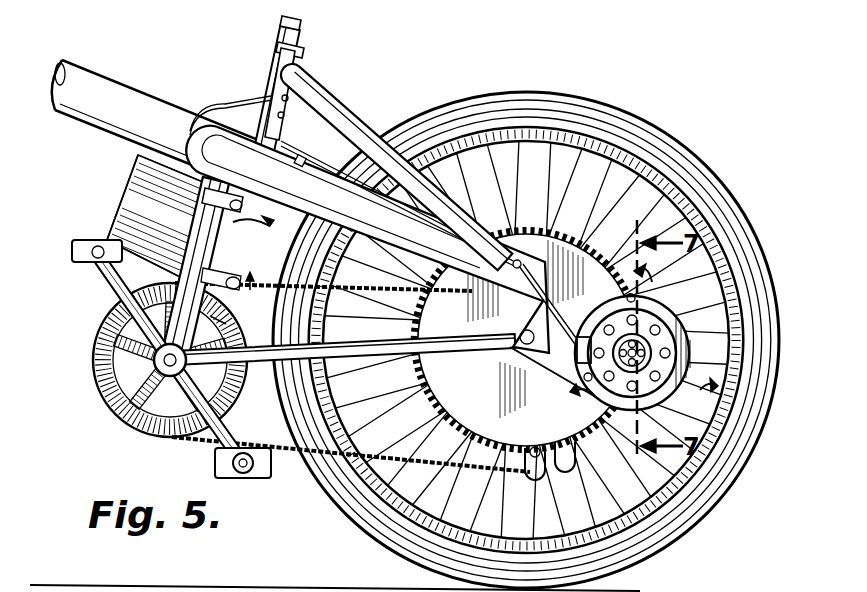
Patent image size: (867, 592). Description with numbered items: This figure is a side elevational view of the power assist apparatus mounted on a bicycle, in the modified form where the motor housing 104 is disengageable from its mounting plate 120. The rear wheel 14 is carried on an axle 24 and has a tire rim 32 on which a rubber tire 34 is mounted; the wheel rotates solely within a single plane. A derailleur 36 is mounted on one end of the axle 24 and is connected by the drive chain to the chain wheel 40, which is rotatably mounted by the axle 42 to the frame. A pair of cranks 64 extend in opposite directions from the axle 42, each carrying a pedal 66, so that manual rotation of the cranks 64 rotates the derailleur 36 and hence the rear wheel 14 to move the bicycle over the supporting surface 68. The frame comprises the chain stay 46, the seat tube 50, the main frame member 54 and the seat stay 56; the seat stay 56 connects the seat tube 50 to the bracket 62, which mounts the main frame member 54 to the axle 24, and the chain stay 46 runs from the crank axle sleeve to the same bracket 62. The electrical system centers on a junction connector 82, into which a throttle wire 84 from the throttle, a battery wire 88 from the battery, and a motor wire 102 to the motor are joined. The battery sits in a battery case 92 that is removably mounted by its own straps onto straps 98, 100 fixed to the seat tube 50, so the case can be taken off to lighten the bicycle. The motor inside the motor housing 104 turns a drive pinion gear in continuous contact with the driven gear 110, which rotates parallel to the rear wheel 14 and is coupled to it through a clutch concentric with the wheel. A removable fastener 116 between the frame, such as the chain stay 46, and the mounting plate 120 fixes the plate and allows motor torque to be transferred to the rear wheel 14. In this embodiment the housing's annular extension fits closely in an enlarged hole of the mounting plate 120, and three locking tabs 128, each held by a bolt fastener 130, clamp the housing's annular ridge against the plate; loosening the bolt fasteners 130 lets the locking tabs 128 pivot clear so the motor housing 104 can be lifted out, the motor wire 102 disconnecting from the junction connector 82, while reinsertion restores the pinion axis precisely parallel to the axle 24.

The rear wheel 14 is at (549, 308).
The axle 24 is at (526, 340).
The tire rim 32 is at (526, 340).
The rubber tire 34 is at (526, 340).
The derailleur 36 is at (300, 470).
The chain wheel 40 is at (143, 360).
The axle 42 is at (100, 365).
The chain stay 46 is at (520, 470).
The seat tube 50 is at (218, 318).
The main frame member 54 is at (153, 101).
The seat stay 56 is at (325, 82).
The bracket 62 is at (526, 340).
The cranks 64 is at (115, 283).
The pedal 66 is at (80, 256).
The supporting surface 68 is at (718, 588).
The junction connector 82 is at (265, 85).
The throttle wire 84 is at (98, 128).
The battery wire 88 is at (137, 218).
The battery case 92 is at (115, 218).
The strap 98 is at (208, 205).
The strap 100 is at (228, 270).
The motor wire 102 is at (327, 165).
The motor housing 104 is at (525, 340).
The driven gear 110 is at (526, 340).
The fastener 116 is at (526, 340).
The mounting plate 120 is at (587, 276).
The locking tabs 128 is at (673, 337).
The bolt fastener 130 is at (700, 374).